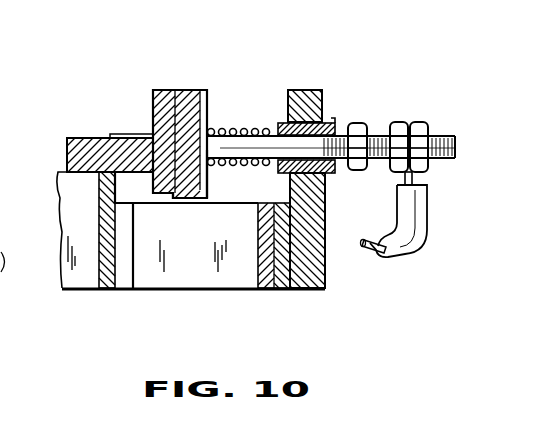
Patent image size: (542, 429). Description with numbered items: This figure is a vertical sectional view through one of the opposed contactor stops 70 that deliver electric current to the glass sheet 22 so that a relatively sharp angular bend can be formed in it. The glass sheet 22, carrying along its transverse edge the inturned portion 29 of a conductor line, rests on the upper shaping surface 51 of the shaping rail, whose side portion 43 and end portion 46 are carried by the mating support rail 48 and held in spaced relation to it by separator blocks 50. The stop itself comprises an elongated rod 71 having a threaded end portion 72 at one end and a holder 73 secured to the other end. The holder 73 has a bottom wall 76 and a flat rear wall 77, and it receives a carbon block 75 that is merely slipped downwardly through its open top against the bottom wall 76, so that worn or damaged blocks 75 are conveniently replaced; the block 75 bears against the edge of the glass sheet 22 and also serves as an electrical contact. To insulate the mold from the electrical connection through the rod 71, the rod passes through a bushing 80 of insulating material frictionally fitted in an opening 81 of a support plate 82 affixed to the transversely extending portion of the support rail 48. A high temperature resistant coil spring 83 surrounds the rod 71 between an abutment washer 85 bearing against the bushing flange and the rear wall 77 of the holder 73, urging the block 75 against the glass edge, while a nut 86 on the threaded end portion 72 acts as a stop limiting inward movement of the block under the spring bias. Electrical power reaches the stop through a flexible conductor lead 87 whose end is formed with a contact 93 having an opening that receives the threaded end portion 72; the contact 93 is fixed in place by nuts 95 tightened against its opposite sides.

The glass sheet 22 is at (72, 142).
The inturned portion 29 is at (117, 135).
The side portion 43 is at (73, 225).
The end portion 46 is at (101, 263).
The support rail 48 is at (270, 276).
The separator block 50 is at (147, 278).
The upper shaping surface 51 is at (99, 165).
The contactor stop 70 is at (276, 46).
The rod 71 is at (242, 140).
The threaded end portion 72 is at (379, 142).
The holder 73 is at (215, 86).
The carbon block 75 is at (160, 110).
The bottom wall 76 is at (175, 196).
The rear wall 77 is at (208, 183).
The bushing 80 is at (323, 118).
The opening 81 is at (326, 186).
The support plate 82 is at (321, 272).
The coil spring 83 is at (223, 131).
The abutment washer 85 is at (278, 120).
The nut 86 is at (356, 124).
The conductor lead 87 is at (409, 258).
The contact 93 is at (416, 183).
The nuts 95 is at (424, 122).